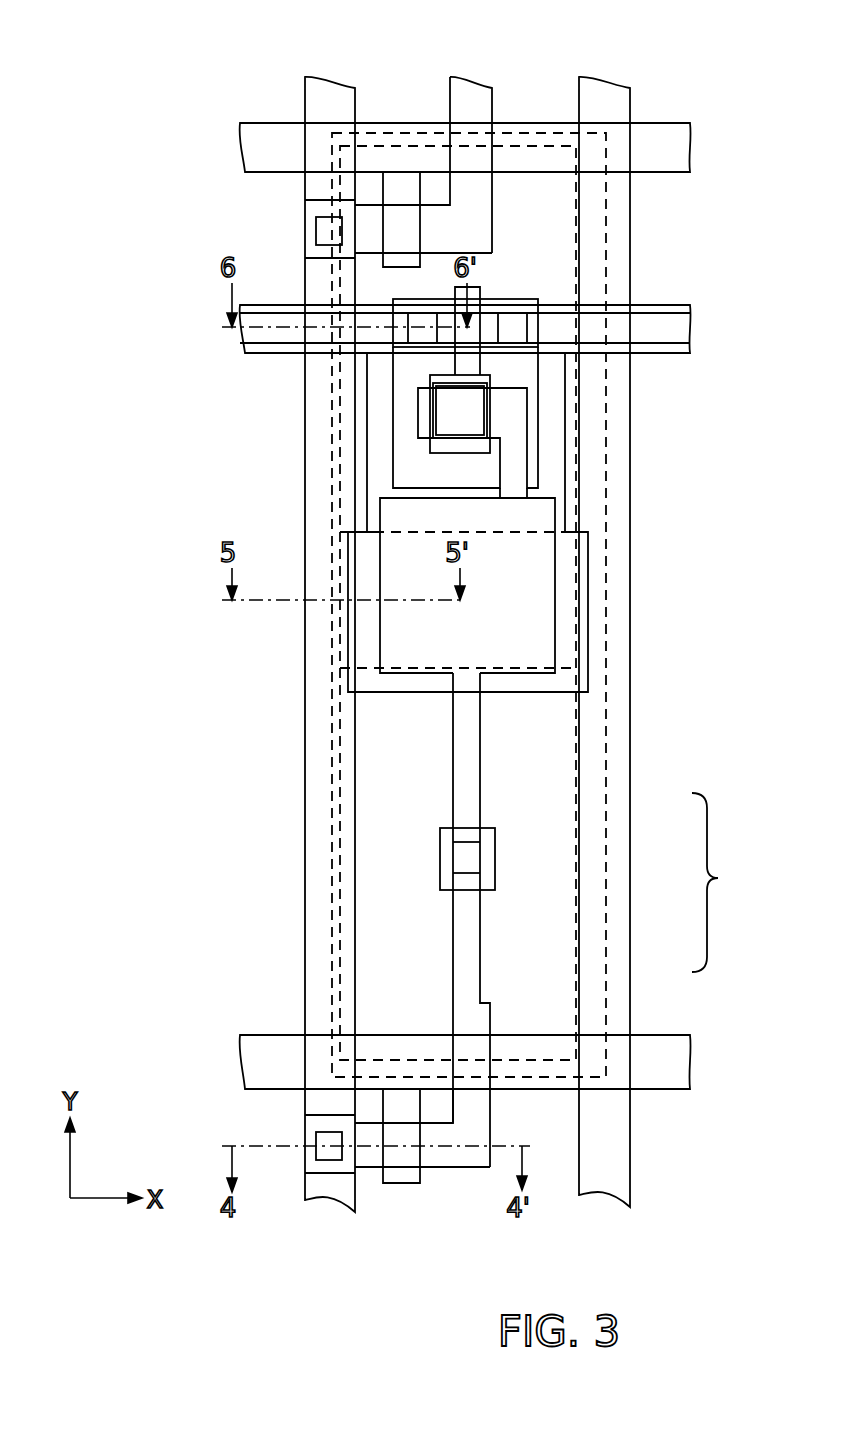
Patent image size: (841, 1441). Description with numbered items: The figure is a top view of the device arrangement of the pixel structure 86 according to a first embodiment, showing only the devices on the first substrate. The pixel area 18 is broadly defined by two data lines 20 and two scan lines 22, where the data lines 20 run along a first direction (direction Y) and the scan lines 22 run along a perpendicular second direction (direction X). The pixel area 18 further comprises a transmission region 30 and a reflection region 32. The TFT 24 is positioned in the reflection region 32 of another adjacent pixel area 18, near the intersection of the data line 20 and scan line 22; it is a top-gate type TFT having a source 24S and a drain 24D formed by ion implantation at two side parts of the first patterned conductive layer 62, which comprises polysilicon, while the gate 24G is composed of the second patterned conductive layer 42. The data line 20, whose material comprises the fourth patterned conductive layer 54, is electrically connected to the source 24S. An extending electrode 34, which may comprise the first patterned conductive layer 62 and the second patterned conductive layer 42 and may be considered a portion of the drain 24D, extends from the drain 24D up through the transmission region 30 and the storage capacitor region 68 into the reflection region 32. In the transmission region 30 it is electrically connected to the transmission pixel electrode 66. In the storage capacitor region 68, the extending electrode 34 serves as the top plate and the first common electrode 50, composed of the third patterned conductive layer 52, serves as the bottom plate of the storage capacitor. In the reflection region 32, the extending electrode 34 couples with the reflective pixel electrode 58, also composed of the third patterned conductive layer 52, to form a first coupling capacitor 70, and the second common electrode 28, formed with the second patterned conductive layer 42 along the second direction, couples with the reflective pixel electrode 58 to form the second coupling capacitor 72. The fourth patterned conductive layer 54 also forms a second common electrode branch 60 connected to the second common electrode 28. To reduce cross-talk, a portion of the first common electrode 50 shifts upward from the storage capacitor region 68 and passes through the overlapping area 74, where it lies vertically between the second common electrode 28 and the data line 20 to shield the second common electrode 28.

The pixel area 18 is at (605, 488).
The data line 20 is at (313, 903).
The scan line 22 is at (687, 1070).
The TFT 24 is at (411, 1217).
The source 24S is at (367, 1157).
The gate 24G is at (403, 1168).
The drain 24D is at (422, 1225).
The second common electrode 28 is at (683, 325).
The transmission region 30 is at (340, 765).
The reflection region 32 is at (372, 140).
The extending electrode 34 is at (722, 882).
The second patterned conductive layer 42 is at (690, 135).
The first common electrode 50 is at (572, 633).
The third patterned conductive layer 52 is at (367, 445).
The fourth patterned conductive layer 54 is at (305, 660).
The reflective pixel electrode 58 is at (472, 367).
The second common electrode branch 60 is at (440, 312).
The first patterned conductive layer 62 is at (480, 945).
The transmission pixel electrode 66 is at (377, 835).
The storage capacitor region 68 is at (555, 600).
The first coupling capacitor 70 is at (497, 418).
The second coupling capacitor 72 is at (495, 290).
The overlapping area 74 is at (325, 360).
The pixel structure 86 is at (707, 90).